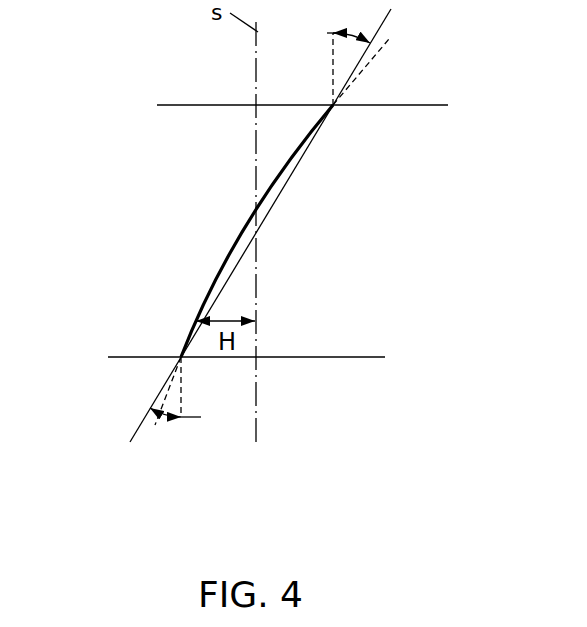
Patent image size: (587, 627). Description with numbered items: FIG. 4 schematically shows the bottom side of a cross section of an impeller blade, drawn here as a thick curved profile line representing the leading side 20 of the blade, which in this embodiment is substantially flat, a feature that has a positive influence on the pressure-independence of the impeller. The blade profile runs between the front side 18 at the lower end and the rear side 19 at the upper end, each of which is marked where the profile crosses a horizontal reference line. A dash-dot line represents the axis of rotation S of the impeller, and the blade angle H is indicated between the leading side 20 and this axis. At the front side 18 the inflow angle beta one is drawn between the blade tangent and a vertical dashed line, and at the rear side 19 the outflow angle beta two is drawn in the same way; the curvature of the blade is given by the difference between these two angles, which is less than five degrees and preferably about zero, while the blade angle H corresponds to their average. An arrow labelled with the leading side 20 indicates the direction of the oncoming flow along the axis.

The front side 18 is at (174, 355).
The rear side 19 is at (344, 100).
The leading side 20 is at (240, 238).